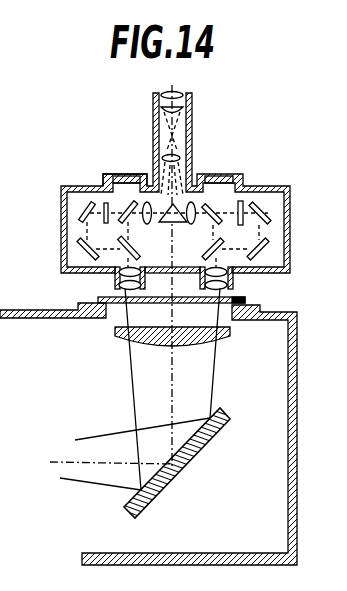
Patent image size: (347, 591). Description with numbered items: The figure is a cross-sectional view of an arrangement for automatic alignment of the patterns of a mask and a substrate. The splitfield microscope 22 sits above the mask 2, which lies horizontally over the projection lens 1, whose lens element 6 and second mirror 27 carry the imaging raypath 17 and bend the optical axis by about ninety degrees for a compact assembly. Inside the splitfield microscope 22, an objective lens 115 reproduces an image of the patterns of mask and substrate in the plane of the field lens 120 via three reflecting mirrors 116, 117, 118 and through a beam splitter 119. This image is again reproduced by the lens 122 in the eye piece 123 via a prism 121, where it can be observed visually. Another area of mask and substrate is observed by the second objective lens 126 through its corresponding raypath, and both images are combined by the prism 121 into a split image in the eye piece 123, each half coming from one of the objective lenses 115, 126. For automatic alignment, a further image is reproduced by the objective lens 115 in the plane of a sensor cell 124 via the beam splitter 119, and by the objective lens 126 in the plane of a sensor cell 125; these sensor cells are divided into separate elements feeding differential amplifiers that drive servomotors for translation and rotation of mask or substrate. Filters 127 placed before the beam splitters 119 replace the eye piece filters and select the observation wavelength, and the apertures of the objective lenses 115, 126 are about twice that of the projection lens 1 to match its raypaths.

The projection lens 1 is at (293, 459).
The mask 2 is at (247, 301).
The lens element 6 is at (228, 333).
The imaging raypath 17 is at (95, 488).
The splitfield microscope 22 is at (288, 203).
The second mirror 27 is at (216, 432).
The objective lens 115 is at (117, 282).
The reflecting mirror 116 is at (125, 245).
The reflecting mirror 117 is at (72, 246).
The reflecting mirror 118 is at (85, 203).
The beam splitter 119 is at (125, 203).
The field lens 120 is at (147, 201).
The prism 121 is at (173, 203).
The lens 122 is at (178, 157).
The eye piece 123 is at (181, 94).
The sensor cell 124 is at (118, 173).
The sensor cell 125 is at (231, 177).
The second objective lens 126 is at (234, 282).
The filter 127 is at (240, 223).